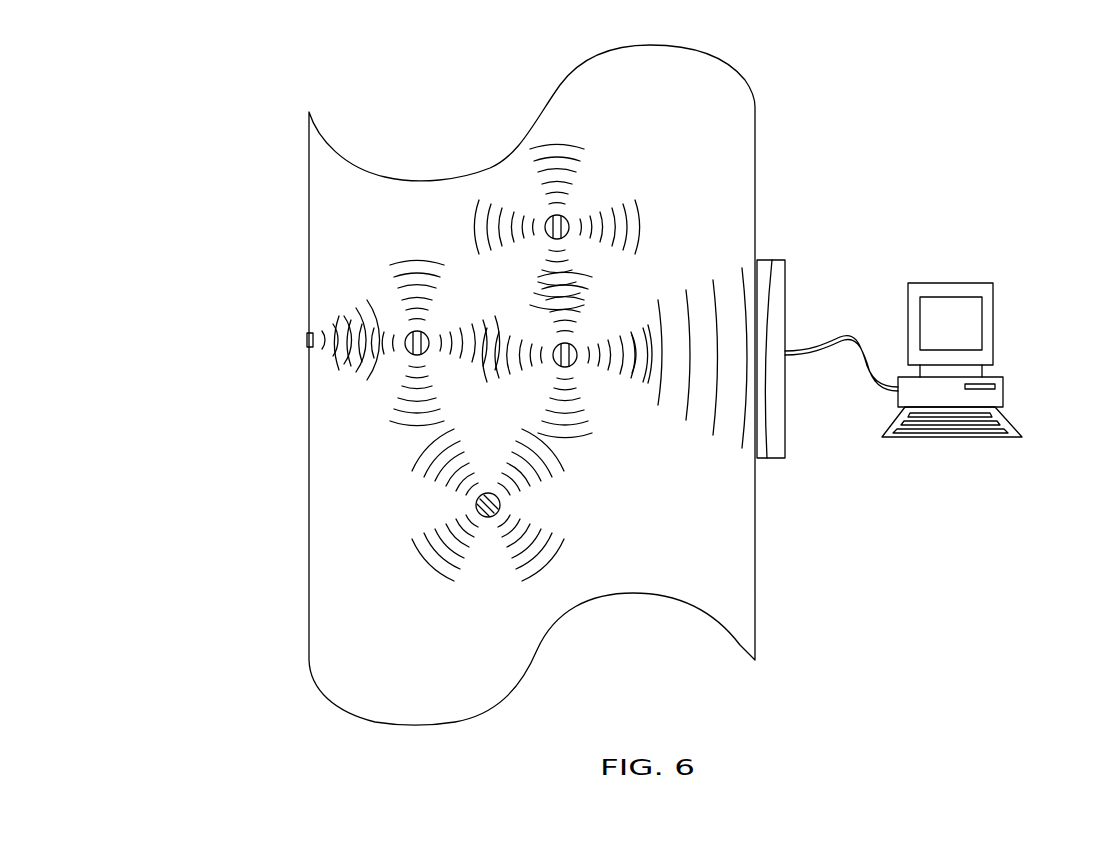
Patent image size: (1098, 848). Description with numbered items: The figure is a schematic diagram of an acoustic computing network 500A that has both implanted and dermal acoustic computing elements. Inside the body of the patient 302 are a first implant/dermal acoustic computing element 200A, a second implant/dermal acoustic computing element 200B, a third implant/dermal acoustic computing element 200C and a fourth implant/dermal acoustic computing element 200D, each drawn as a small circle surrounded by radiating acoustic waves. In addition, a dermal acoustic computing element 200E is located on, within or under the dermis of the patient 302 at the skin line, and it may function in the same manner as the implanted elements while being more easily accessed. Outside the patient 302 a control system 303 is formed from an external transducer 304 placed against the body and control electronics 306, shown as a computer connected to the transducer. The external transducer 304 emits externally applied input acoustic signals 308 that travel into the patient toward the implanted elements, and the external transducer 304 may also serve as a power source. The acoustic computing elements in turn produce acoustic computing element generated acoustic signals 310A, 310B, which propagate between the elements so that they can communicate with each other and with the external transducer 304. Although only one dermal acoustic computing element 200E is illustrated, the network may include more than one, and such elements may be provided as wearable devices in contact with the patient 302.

The acoustic computing network 500A is at (426, 113).
The patient 302 is at (418, 668).
The dermal acoustic computing element 200E is at (305, 340).
The first implant/dermal acoustic computing element 200A is at (296, 300).
The second implant/dermal acoustic computing element 200B is at (336, 260).
The third implant/dermal acoustic computing element 200C is at (548, 370).
The fourth implant/dermal acoustic computing element 200D is at (463, 503).
The acoustic computing element generated acoustic signal 310A is at (540, 243).
The acoustic computing element generated acoustic signal 310B is at (400, 255).
The externally applied input acoustic signals 308 is at (725, 277).
The control system 303 is at (917, 432).
The external transducer 304 is at (779, 462).
The control electronics 306 is at (958, 441).